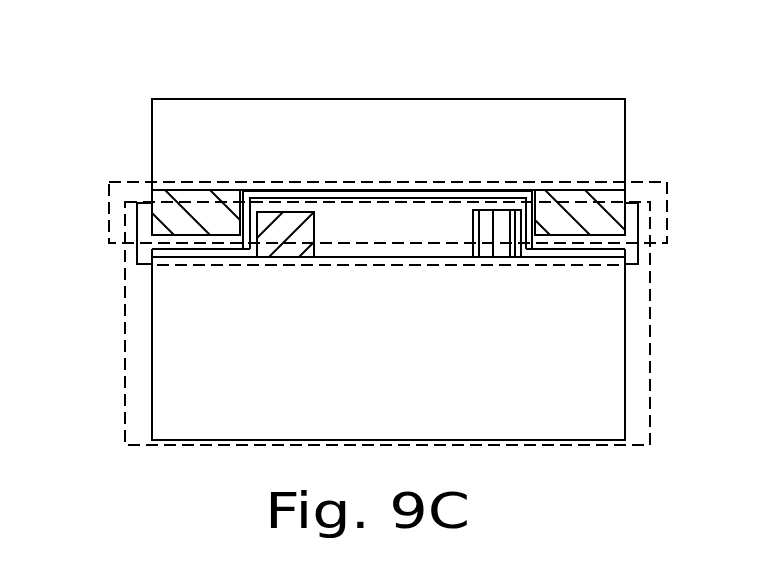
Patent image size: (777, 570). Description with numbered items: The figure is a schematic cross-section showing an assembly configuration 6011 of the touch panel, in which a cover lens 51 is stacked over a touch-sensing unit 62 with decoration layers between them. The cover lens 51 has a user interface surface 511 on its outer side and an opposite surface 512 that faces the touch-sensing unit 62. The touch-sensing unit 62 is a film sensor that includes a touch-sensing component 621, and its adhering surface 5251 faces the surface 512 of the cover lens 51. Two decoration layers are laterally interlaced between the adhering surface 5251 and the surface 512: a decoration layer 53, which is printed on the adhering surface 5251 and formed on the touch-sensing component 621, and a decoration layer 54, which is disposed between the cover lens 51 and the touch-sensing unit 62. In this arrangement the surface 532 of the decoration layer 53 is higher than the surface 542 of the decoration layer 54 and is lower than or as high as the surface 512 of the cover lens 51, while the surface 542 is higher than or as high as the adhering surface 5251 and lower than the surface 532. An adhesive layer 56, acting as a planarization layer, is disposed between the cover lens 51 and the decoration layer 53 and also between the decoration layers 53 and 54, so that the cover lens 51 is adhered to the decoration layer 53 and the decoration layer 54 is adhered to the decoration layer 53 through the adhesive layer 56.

The assembly configuration 6011 is at (620, 71).
The cover lens 51 is at (190, 147).
The user interface surface 511 is at (316, 99).
The surface 512 is at (369, 190).
The surface of the decoration layer 532 is at (275, 212).
The surface of the decoration layer 542 is at (230, 235).
The adhesive layer 56 is at (548, 258).
The adhering surface 5251 is at (428, 258).
The touch-sensing component 621 is at (170, 410).
The decoration layer 53 is at (137, 258).
The decoration layer 54 is at (109, 233).
The touch-sensing unit 62 is at (650, 350).